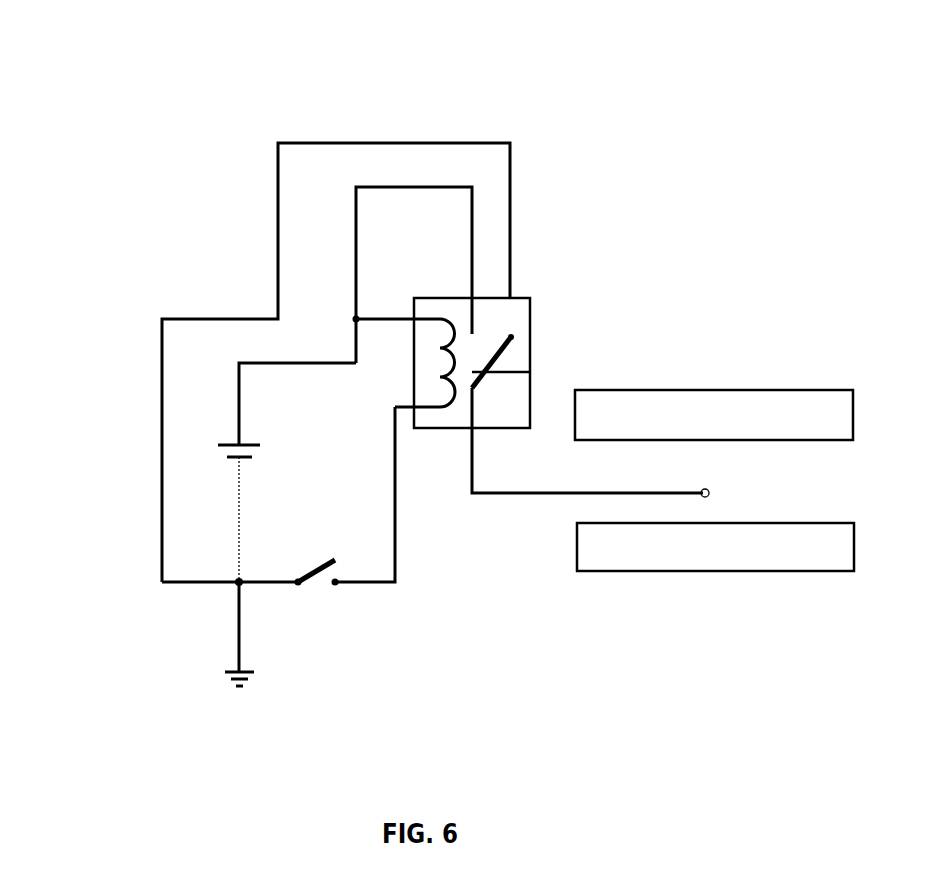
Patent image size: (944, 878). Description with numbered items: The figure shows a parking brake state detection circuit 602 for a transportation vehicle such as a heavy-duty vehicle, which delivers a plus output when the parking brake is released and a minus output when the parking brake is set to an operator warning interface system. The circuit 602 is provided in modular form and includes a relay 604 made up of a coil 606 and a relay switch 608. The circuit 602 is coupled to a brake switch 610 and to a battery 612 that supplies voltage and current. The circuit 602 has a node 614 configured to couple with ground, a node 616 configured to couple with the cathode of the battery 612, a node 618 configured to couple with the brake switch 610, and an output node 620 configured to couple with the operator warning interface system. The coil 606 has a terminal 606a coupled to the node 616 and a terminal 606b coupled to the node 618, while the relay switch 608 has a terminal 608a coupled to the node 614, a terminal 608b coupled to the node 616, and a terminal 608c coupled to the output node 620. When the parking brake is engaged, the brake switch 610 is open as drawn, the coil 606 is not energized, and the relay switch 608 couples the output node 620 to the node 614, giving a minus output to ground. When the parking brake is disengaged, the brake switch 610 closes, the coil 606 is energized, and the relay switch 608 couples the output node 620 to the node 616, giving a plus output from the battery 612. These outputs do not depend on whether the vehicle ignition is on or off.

The parking brake state detection circuit 602 is at (192, 140).
The relay 604 is at (515, 297).
The coil 606 is at (428, 365).
The terminal 606a is at (397, 316).
The terminal 606b is at (410, 415).
The relay switch 608 is at (532, 372).
The terminal 608a is at (511, 335).
The terminal 608b is at (470, 328).
The terminal 608c is at (474, 408).
The brake switch 610 is at (330, 557).
The battery 612 is at (232, 443).
The node 614 is at (508, 160).
The node 616 is at (415, 186).
The node 618 is at (396, 502).
The output node 620 is at (701, 497).